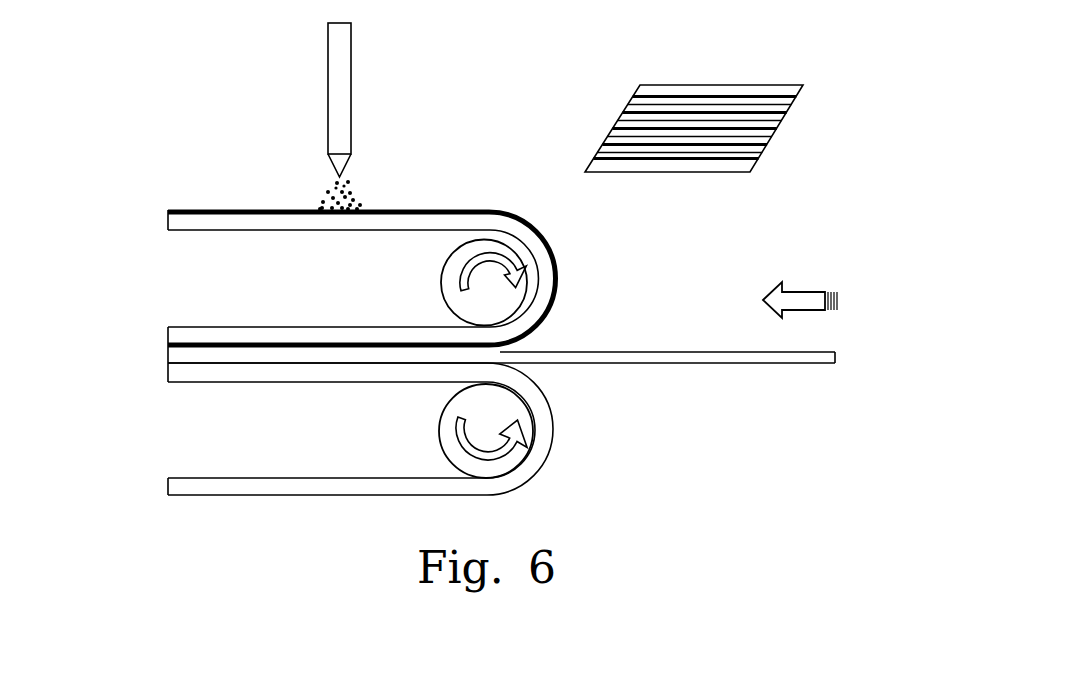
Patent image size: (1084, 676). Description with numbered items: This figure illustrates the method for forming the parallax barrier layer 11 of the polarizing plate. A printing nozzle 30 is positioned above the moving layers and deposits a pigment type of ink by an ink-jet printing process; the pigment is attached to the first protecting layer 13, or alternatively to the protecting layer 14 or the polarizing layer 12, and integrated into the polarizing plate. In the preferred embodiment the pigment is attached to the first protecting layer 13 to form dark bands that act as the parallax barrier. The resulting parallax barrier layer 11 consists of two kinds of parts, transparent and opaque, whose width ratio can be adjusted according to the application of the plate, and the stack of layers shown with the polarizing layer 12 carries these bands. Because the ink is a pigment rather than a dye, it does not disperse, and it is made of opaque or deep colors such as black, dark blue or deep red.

The printing nozzle 30 is at (345, 68).
The first protecting layer 13 is at (344, 274).
The protecting layer 14 is at (342, 416).
The polarizing layer 12 is at (517, 358).
The parallax barrier layer 11 is at (565, 258).